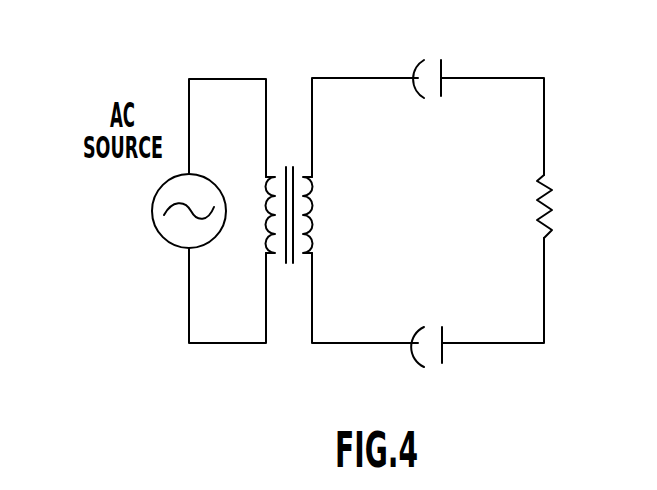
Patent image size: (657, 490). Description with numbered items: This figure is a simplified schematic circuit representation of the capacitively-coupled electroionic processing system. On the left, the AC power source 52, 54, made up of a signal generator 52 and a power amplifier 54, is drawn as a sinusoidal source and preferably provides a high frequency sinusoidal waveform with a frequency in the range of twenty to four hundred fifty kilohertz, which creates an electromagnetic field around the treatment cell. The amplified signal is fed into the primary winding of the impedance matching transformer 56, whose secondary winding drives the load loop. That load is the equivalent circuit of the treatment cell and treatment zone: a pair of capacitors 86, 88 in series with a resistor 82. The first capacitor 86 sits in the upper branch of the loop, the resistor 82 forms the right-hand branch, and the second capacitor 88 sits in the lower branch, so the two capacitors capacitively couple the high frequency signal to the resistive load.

The signal generator 52 is at (129, 211).
The power amplifier 54 is at (151, 208).
The impedance matching transformer 56 is at (317, 175).
The resistor 82 is at (552, 192).
The capacitor 86 is at (443, 68).
The capacitor 88 is at (443, 352).